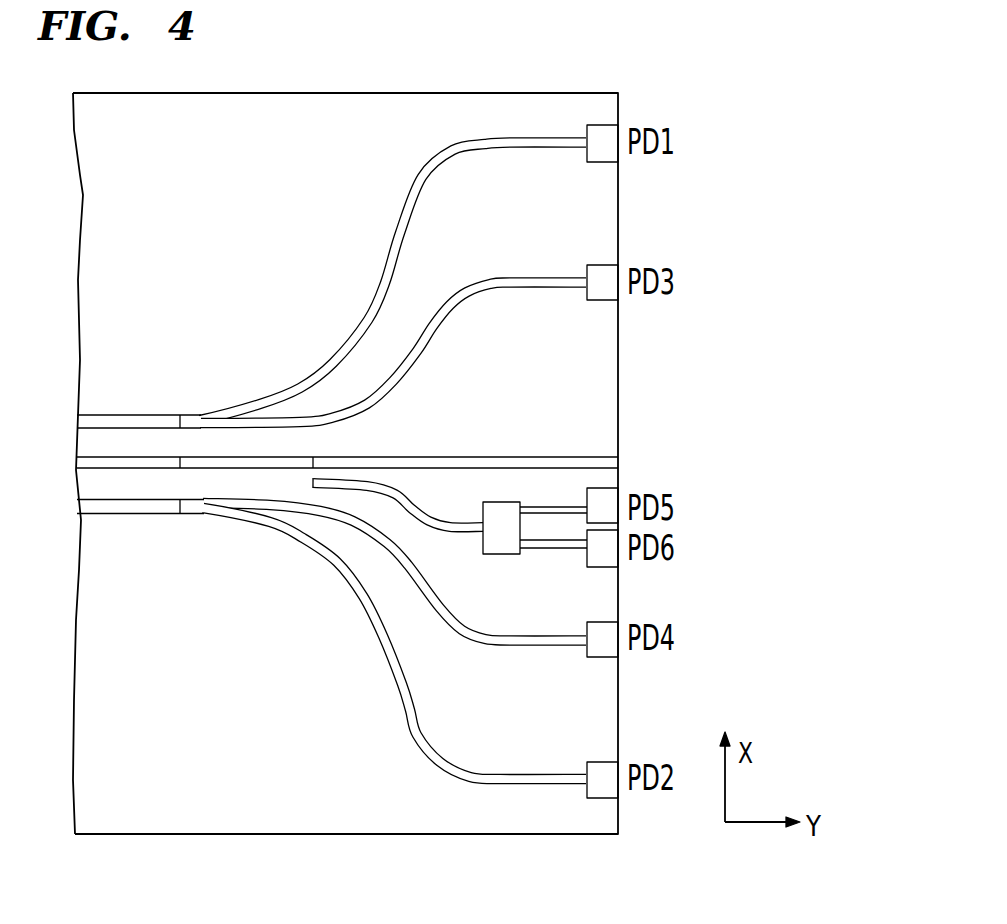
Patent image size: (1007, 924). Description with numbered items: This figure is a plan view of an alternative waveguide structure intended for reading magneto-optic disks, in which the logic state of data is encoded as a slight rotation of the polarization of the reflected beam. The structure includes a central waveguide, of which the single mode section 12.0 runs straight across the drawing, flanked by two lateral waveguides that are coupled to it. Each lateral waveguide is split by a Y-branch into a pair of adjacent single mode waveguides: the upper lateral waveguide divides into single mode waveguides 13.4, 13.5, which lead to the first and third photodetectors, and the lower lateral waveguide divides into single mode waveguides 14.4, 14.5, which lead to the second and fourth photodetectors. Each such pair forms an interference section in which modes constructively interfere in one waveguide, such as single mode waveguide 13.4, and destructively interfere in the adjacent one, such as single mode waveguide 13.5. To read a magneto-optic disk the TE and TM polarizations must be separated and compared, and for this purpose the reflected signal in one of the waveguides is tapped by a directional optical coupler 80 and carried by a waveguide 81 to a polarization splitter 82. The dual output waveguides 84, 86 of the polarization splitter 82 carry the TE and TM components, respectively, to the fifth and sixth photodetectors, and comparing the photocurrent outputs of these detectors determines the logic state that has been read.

The single mode waveguide 13.4 is at (367, 308).
The single mode waveguide 13.5 is at (475, 278).
The single mode section 12.0 is at (455, 457).
The single mode waveguide 14.5 is at (474, 637).
The single mode waveguide 14.4 is at (397, 702).
The directional optical coupler 80 is at (337, 482).
The waveguide 81 is at (413, 503).
The polarization splitter 82 is at (503, 556).
The output waveguide 84 is at (583, 506).
The output waveguide 86 is at (582, 552).